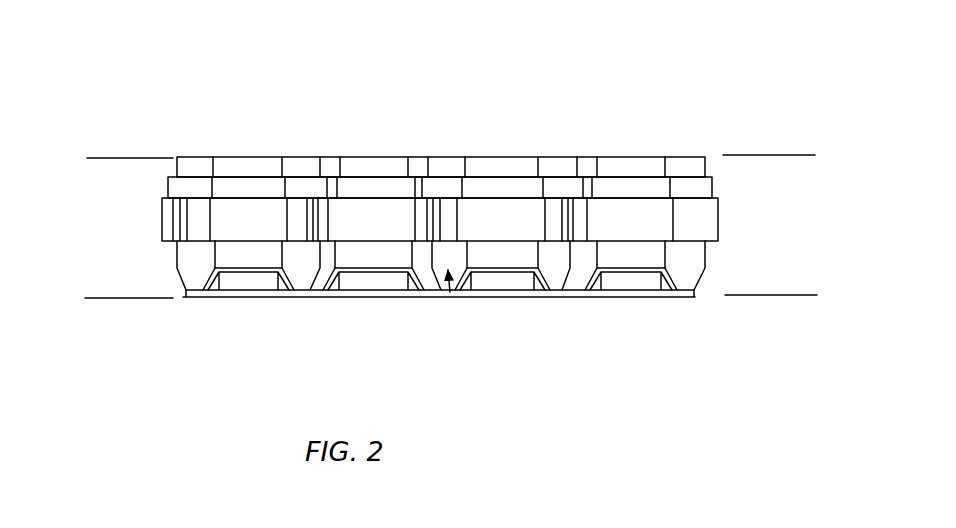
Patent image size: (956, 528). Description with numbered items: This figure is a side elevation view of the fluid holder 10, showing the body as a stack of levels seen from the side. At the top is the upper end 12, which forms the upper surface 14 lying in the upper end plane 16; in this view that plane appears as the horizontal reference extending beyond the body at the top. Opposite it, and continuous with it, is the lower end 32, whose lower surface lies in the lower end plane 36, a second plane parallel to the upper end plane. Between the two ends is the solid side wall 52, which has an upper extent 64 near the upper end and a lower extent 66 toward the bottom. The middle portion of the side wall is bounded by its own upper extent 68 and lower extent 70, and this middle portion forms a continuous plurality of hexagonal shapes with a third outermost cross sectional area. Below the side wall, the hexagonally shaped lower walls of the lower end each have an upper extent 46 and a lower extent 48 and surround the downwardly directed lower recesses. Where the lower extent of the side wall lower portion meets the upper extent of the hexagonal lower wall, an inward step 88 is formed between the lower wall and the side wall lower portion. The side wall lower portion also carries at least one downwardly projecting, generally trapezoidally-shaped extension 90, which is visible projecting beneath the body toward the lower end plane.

The electronic assembly 10 is at (432, 191).
The upper end 12 is at (304, 112).
The upper surface 14 is at (606, 118).
The upper end plane 16 is at (464, 182).
The lower end 32 is at (444, 336).
The lower end plane 36 is at (448, 332).
The upper extent of hexagonally shaped lower wall 46 is at (440, 309).
The lower extent of hexagonally shaped lower wall 48 is at (436, 323).
The side wall 52 is at (385, 222).
The upper extent of side wall 64 is at (492, 137).
The lower extent of side wall 66 is at (513, 304).
The upper extent of side wall middle portion 68 is at (404, 198).
The lower extent of side wall middle portion 70 is at (337, 238).
The inward step 88 is at (185, 305).
The trapezoidally-shaped extension 90 is at (462, 322).